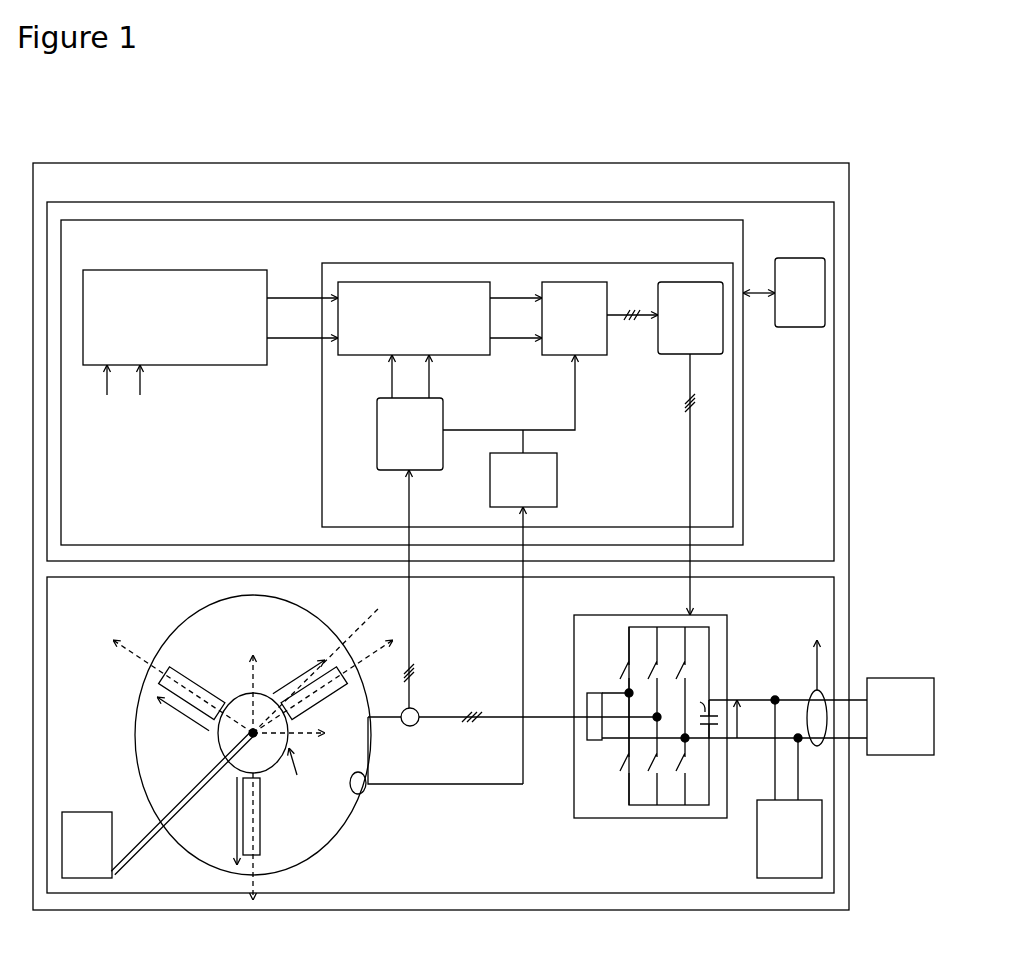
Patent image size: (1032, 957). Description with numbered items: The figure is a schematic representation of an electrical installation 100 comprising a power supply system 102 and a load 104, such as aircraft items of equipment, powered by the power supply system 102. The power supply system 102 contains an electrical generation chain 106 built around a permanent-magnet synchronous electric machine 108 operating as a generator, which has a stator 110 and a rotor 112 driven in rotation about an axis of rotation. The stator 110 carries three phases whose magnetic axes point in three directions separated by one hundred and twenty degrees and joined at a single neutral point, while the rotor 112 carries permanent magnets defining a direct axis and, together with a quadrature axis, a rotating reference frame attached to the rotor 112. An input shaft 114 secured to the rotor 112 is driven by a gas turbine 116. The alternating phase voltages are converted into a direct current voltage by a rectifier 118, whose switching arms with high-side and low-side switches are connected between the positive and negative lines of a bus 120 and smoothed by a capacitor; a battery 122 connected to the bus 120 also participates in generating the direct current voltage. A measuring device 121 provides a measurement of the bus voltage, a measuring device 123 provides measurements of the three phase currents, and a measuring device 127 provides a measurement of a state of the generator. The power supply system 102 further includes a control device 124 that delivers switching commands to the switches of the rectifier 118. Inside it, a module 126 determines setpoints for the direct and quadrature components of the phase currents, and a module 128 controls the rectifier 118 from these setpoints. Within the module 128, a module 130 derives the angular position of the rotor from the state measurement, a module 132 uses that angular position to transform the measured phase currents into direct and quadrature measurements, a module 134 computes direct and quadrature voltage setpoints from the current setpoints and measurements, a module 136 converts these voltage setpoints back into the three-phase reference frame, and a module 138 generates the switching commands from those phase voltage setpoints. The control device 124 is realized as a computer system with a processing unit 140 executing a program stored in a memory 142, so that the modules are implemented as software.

The electrical installation 100 is at (862, 128).
The power supply system 102 is at (450, 536).
The load 104 is at (900, 716).
The electrical generation chain 106 is at (457, 738).
The synchronous electric machine 108 is at (357, 848).
The stator 110 is at (267, 747).
The rotor 112 is at (253, 733).
The input shaft 114 is at (150, 857).
The gas turbine 116 is at (87, 845).
The rectifier 118 is at (605, 820).
The bus 120 is at (755, 687).
The measuring device 121 is at (808, 702).
The battery 122 is at (789, 839).
The measuring device 123 is at (415, 726).
The control device 124 is at (440, 493).
The module 126 is at (175, 317).
The measuring device 127 is at (362, 792).
The module 128 is at (527, 523).
The module 130 is at (523, 480).
The module 132 is at (410, 434).
The module 134 is at (414, 318).
The module 136 is at (574, 318).
The module 138 is at (690, 318).
The processing unit 140 is at (800, 292).
The memory 142 is at (443, 502).